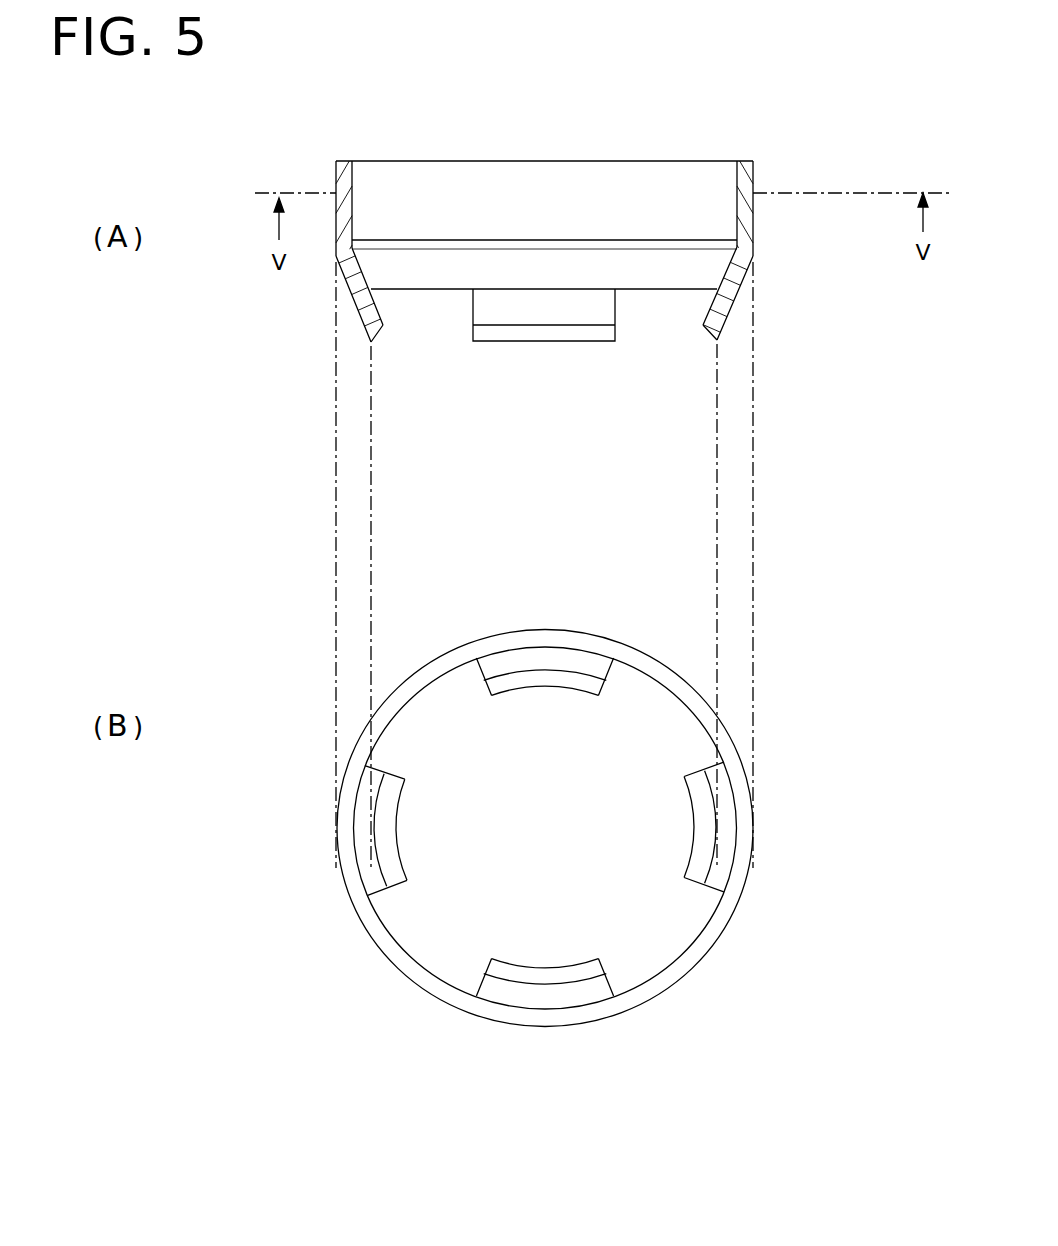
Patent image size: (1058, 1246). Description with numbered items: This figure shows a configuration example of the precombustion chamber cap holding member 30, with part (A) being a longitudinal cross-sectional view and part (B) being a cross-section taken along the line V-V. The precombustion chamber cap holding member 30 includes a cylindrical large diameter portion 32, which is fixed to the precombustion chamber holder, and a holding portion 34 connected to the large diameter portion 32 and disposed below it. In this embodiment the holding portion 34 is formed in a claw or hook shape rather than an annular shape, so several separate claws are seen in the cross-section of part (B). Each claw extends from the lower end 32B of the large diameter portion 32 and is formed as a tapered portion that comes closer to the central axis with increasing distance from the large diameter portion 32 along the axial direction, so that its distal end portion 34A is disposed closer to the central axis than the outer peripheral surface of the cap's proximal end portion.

The precombustion chamber cap holding member 30 is at (887, 215).
The large diameter portion 32 is at (752, 213).
The lower end 32B is at (753, 257).
The holding portion 34 is at (728, 290).
The tip of flap 34A is at (719, 337).